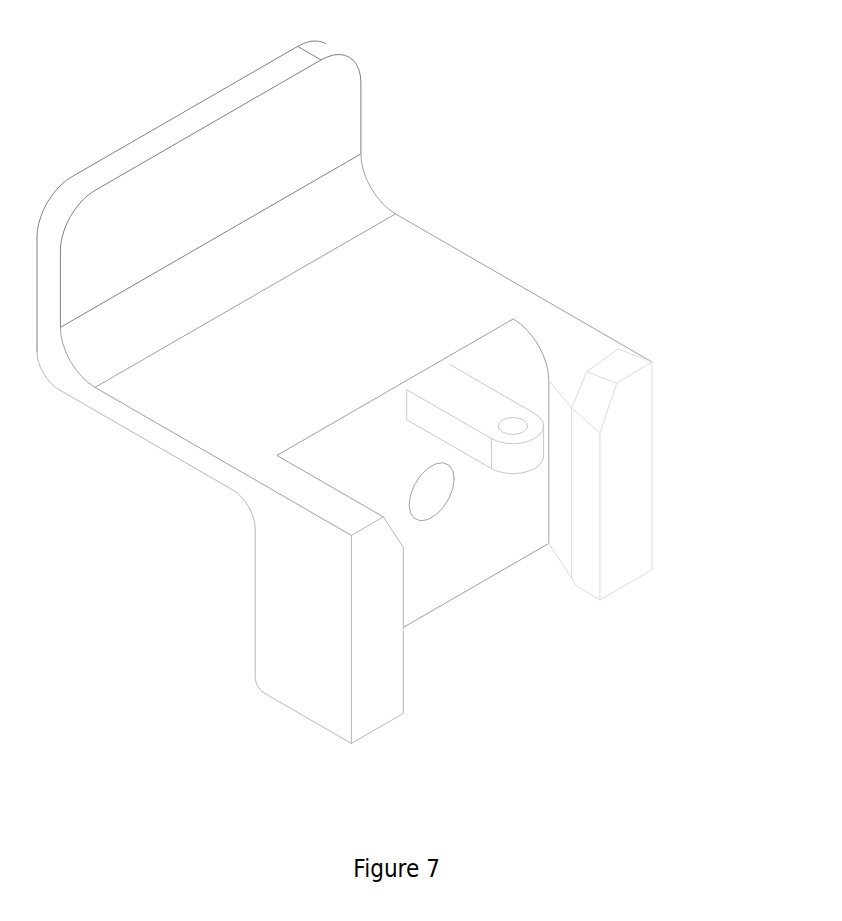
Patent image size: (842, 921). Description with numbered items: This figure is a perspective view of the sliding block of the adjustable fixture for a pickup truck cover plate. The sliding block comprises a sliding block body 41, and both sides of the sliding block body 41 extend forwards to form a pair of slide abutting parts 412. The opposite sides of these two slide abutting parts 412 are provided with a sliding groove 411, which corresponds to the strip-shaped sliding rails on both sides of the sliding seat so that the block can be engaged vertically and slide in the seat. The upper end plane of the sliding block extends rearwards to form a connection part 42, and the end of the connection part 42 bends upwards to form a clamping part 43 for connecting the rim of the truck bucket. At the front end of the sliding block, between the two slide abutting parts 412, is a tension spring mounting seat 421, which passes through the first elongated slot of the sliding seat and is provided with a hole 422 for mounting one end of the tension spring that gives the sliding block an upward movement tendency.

The sliding block body 41 is at (300, 585).
The sliding groove 411 is at (560, 507).
The slide abutting part 412 is at (590, 512).
The connection part 42 is at (373, 305).
The tension spring mounting seat 421 is at (482, 401).
The hole 422 is at (520, 427).
The clamping part 43 is at (207, 180).